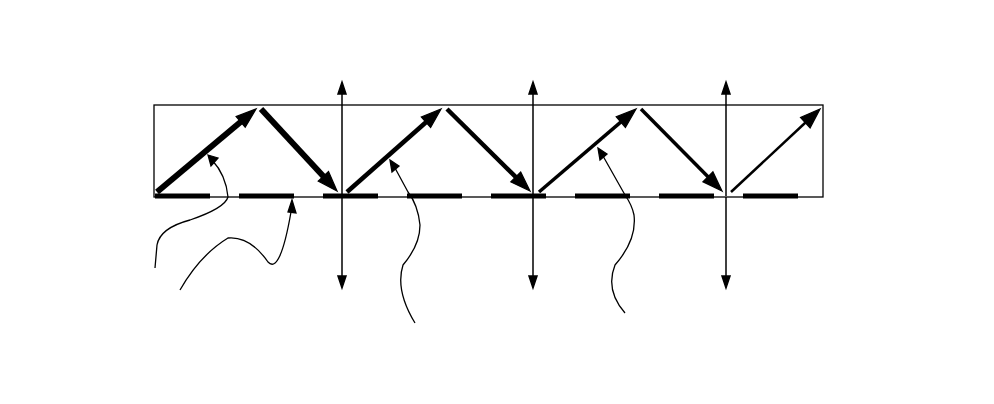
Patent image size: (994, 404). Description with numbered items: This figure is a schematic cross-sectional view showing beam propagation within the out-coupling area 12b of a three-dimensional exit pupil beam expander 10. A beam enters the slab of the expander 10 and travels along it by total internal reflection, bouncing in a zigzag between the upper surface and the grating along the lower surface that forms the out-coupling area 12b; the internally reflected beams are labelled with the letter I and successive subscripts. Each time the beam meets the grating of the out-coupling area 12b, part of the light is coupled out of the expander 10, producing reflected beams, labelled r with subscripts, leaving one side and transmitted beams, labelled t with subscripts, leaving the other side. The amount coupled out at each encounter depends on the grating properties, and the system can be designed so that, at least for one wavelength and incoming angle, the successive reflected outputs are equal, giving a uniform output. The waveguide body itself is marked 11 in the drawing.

The exit pupil beam expander 10 is at (767, 75).
The waveguide 11 is at (183, 101).
The out-coupling area 12b is at (775, 199).